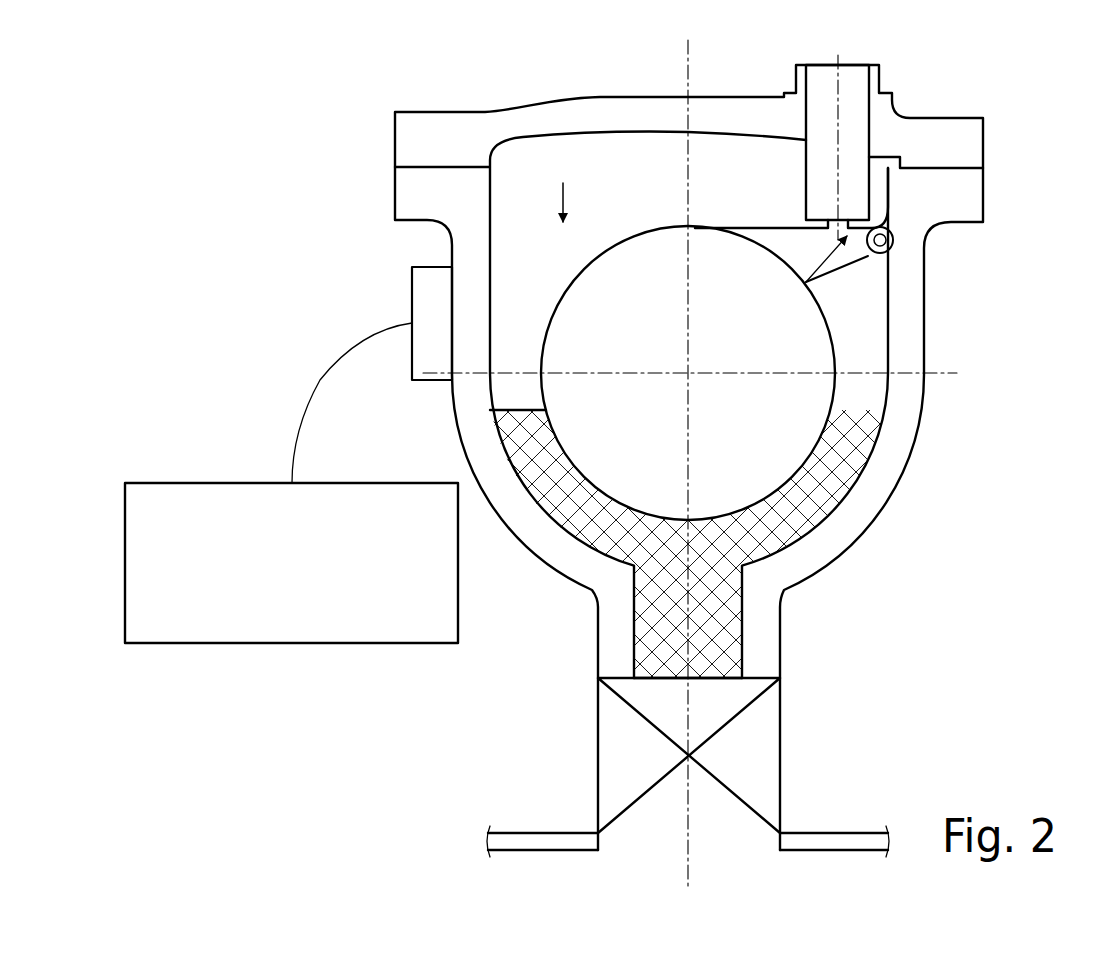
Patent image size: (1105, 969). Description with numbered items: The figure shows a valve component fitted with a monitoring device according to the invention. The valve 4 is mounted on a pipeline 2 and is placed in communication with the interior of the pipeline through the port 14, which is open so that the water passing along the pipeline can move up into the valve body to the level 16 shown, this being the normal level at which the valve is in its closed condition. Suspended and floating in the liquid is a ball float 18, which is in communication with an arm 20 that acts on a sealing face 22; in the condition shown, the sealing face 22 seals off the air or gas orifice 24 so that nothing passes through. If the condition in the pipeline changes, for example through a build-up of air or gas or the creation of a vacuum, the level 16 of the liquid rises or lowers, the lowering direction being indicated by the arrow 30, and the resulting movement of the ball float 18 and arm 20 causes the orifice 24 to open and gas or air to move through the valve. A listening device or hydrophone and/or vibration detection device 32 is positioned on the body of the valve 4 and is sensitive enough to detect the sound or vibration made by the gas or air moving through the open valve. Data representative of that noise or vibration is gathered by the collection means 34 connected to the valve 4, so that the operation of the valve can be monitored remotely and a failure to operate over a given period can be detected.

The pipe 2 is at (548, 832).
The valve 4 is at (910, 337).
The port 14 is at (627, 657).
The level 16 is at (517, 410).
The ball float 18 is at (620, 315).
The arm 20 is at (795, 242).
The sealing face 22 is at (870, 250).
The air or gas orifice 24 is at (860, 147).
The arrow 30 is at (584, 203).
The hydrophone and/or vibration detection device 32 is at (417, 290).
The collection means 34 is at (277, 645).